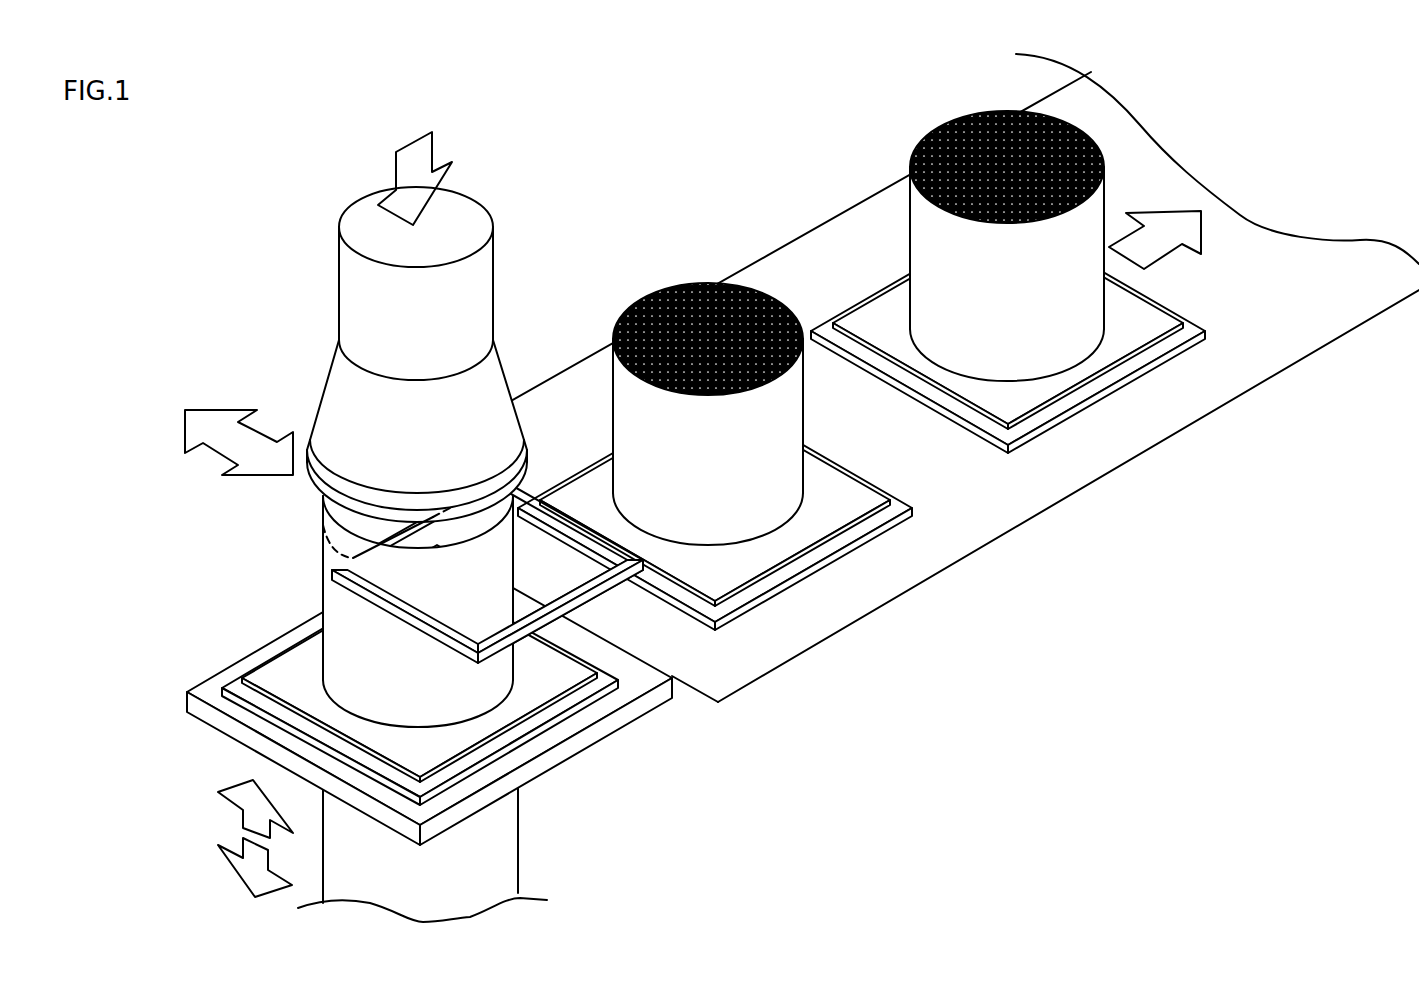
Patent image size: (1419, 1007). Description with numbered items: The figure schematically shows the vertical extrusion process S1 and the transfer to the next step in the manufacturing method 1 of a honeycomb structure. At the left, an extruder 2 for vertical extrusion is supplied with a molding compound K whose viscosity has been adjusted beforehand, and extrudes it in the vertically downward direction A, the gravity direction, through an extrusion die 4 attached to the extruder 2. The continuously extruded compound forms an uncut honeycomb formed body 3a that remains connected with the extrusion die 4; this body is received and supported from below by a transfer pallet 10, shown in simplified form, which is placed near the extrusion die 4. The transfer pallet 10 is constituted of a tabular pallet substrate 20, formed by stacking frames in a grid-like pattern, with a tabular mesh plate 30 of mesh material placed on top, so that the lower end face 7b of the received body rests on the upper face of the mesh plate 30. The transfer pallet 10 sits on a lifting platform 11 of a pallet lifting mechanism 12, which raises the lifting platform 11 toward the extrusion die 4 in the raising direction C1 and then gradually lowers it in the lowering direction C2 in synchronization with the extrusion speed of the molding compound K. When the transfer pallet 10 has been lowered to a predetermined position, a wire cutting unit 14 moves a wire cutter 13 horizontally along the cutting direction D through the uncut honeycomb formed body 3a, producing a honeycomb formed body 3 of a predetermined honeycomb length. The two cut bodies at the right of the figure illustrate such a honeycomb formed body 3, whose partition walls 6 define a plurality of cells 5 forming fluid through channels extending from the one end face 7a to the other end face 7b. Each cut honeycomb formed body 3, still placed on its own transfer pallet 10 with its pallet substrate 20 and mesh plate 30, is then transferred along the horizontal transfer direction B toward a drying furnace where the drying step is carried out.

The manufacturing method 1 is at (683, 122).
The extruder 2 is at (416, 354).
The honeycomb formed body 3 is at (926, 256).
The uncut honeycomb formed body 3a is at (323, 607).
The extrusion die 4 is at (521, 484).
The cells 5 is at (962, 116).
The partition walls 6 is at (922, 140).
The one end face 7a is at (1020, 110).
The other end face 7b is at (1042, 378).
The transfer pallet 10 is at (923, 496).
The lifting platform 11 is at (638, 710).
The pallet lifting mechanism 12 is at (547, 861).
The wire cutter 13 is at (323, 531).
The wire cutting unit 14 is at (590, 592).
The pallet substrate 20 is at (1196, 332).
The mesh plate 30 is at (1105, 377).
The molding compound K is at (358, 302).
The vertically downward direction A is at (404, 150).
The transfer direction B is at (1160, 251).
The cutting direction D is at (244, 432).
The raising direction C1 is at (240, 800).
The lowering direction C2 is at (242, 845).
The vertical extrusion process S1 is at (232, 512).